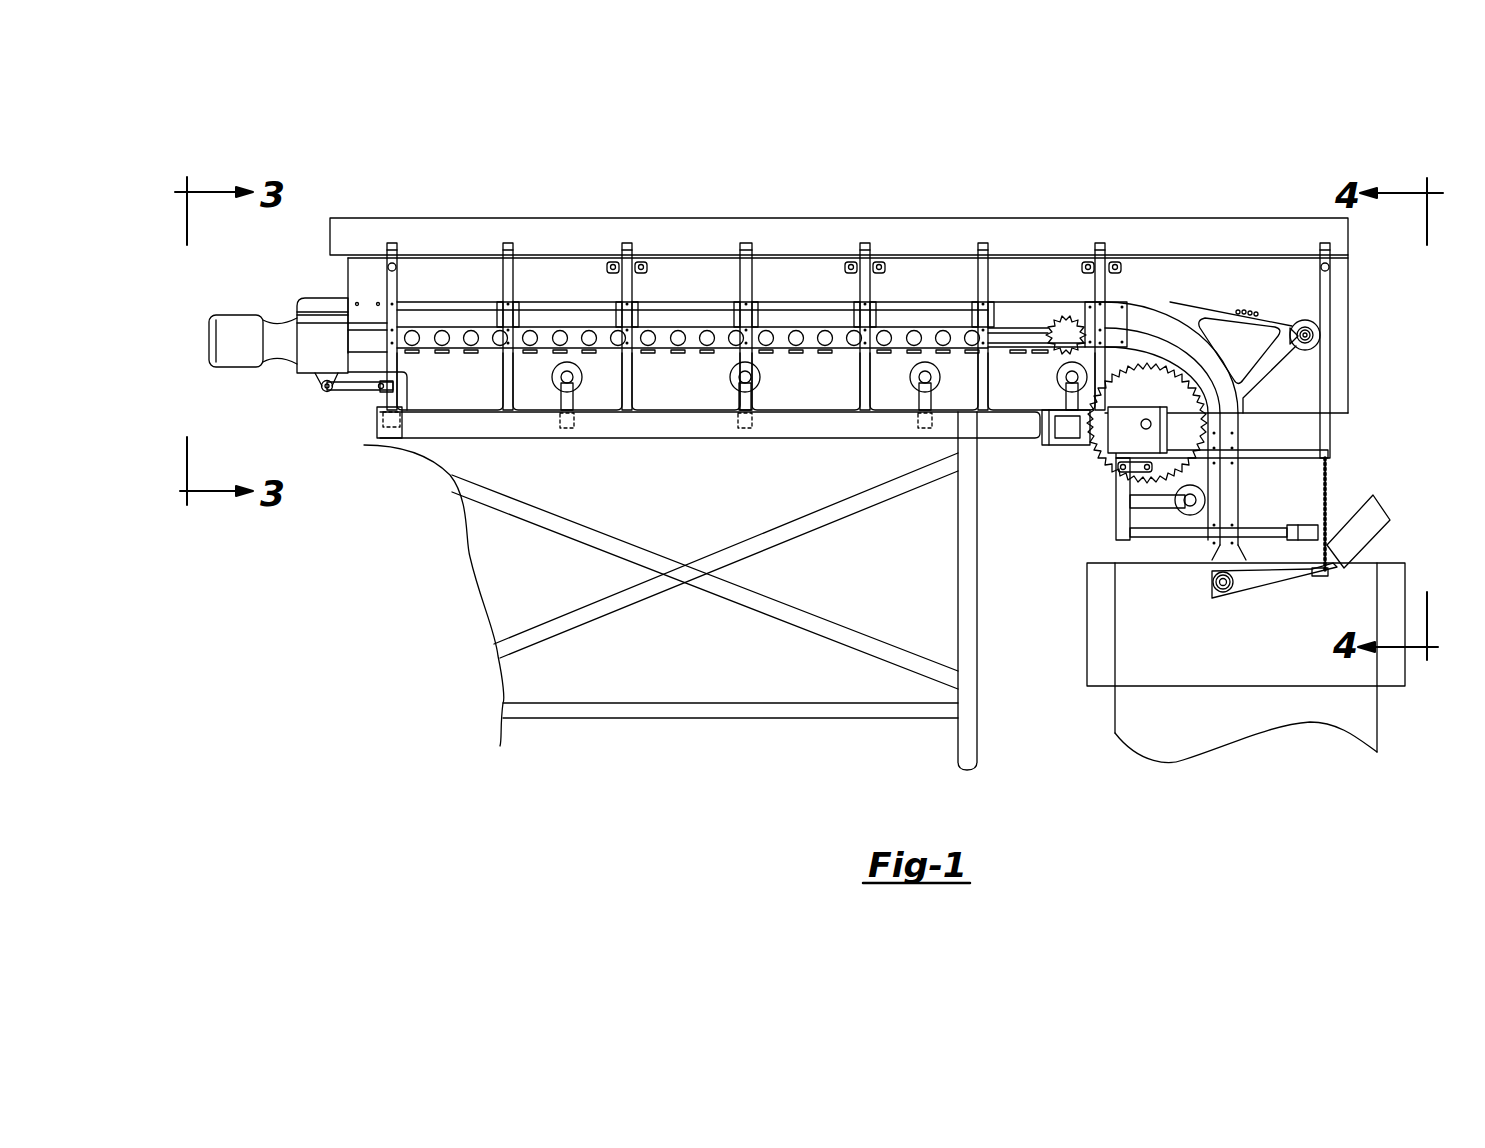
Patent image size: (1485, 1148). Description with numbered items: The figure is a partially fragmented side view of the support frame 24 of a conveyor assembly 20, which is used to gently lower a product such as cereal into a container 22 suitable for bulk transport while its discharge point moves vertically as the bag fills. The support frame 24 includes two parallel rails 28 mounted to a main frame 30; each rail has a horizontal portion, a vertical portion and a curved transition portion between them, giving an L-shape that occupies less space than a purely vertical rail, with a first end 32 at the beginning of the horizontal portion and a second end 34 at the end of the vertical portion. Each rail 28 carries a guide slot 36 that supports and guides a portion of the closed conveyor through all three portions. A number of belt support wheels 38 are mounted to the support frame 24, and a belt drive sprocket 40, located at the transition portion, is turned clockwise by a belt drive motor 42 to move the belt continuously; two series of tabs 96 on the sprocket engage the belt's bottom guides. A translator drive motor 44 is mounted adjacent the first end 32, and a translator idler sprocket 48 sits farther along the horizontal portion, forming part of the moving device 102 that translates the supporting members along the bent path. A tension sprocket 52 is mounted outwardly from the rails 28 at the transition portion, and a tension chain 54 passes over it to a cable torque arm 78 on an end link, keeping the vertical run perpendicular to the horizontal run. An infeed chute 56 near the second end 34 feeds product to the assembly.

The conveyor assembly 20 is at (897, 200).
The moving device 102 is at (473, 200).
The container 22 is at (1125, 713).
The support frame 24 is at (1016, 432).
The rails 28 is at (545, 303).
The main frame 30 is at (975, 617).
The first end 32 is at (362, 308).
The second end 34 is at (1203, 552).
The guide slot 36 is at (660, 310).
The belt support wheels 38 is at (583, 378).
The belt drive sprocket 40 is at (1160, 395).
The belt drive motor 42 is at (1062, 420).
The translator drive motor 44 is at (237, 320).
The translator idler sprocket 48 is at (1064, 312).
The tension sprocket 52 is at (1305, 320).
The tension chain 54 is at (1252, 311).
The infeed chute 56 is at (1373, 510).
The cable torque arm 78 is at (1253, 585).
The tabs 96 is at (1093, 460).